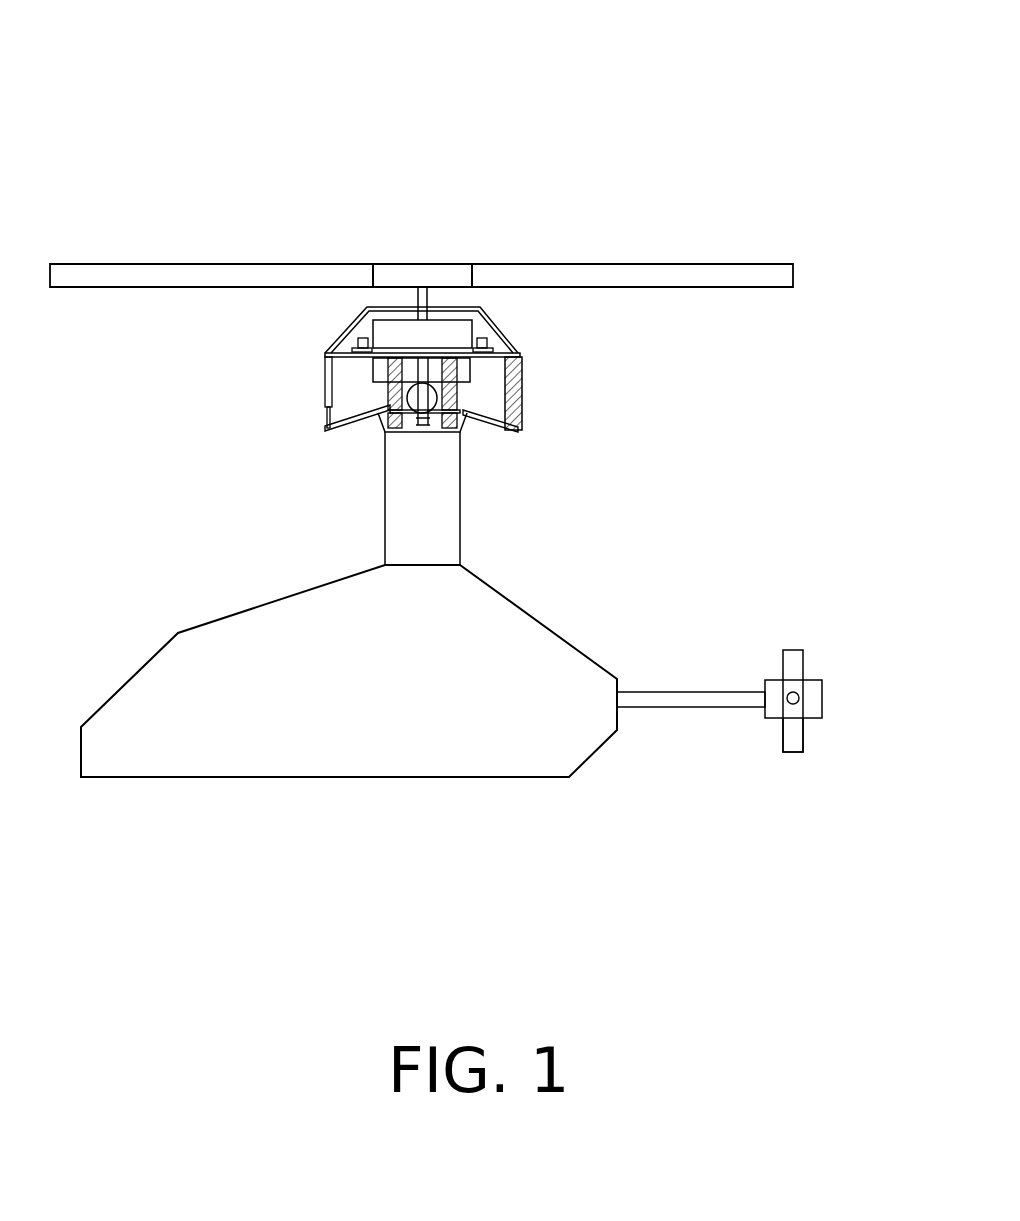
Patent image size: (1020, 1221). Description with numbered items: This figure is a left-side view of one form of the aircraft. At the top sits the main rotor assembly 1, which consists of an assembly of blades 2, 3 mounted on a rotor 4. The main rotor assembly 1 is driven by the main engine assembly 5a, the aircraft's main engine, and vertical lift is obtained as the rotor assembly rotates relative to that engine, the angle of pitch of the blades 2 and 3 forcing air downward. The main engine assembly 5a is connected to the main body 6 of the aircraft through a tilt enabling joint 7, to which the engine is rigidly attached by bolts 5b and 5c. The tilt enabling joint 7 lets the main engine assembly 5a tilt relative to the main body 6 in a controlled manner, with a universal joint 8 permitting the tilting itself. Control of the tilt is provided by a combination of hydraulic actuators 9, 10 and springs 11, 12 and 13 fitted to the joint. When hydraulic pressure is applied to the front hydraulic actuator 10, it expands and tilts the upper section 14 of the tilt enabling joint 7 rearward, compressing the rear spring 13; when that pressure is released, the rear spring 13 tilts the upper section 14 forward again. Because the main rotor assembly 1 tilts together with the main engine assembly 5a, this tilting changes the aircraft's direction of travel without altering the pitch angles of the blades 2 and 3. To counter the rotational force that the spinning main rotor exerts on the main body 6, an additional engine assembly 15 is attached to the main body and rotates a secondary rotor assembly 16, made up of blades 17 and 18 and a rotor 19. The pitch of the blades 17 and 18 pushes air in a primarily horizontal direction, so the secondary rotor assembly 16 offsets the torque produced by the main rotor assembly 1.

The main rotor assembly 1 is at (447, 203).
The blade 2 is at (595, 273).
The blade 3 is at (238, 273).
The rotor 4 is at (417, 292).
The main engine assembly 5a is at (387, 330).
The bolt 5b is at (355, 343).
The bolt 5c is at (485, 340).
The main body 6 is at (452, 733).
The tilt enabling joint 7 is at (672, 390).
The universal joint 8 is at (390, 407).
The hydraulic actuator 9 is at (382, 418).
The front hydraulic actuator 10 is at (327, 372).
The spring 11 is at (390, 395).
The spring 12 is at (463, 415).
The rear spring 13 is at (522, 407).
The upper section 14 is at (518, 355).
The additional engine assembly 15 is at (818, 692).
The secondary rotor assembly 16 is at (777, 760).
The blade 17 is at (790, 660).
The blade 18 is at (795, 750).
The rotor 19 is at (790, 700).